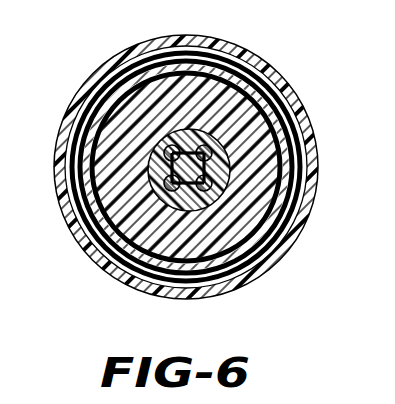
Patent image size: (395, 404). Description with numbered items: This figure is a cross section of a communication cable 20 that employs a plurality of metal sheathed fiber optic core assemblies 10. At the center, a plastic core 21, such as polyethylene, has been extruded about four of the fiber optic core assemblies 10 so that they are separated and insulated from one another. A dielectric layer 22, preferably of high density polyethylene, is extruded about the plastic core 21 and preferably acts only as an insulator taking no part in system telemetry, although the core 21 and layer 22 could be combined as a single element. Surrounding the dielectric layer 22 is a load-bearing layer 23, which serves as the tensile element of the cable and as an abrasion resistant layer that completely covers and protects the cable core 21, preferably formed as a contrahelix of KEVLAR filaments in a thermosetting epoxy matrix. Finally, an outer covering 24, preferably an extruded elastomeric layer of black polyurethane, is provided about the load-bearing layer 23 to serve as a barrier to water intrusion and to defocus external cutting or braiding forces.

The metal sheathed fiber optic core assembly 10 is at (157, 200).
The communication cable 20 is at (278, 59).
The plastic core 21 is at (300, 128).
The dielectric layer 22 is at (257, 191).
The load-bearing layer 23 is at (278, 221).
The outer covering 24 is at (252, 277).